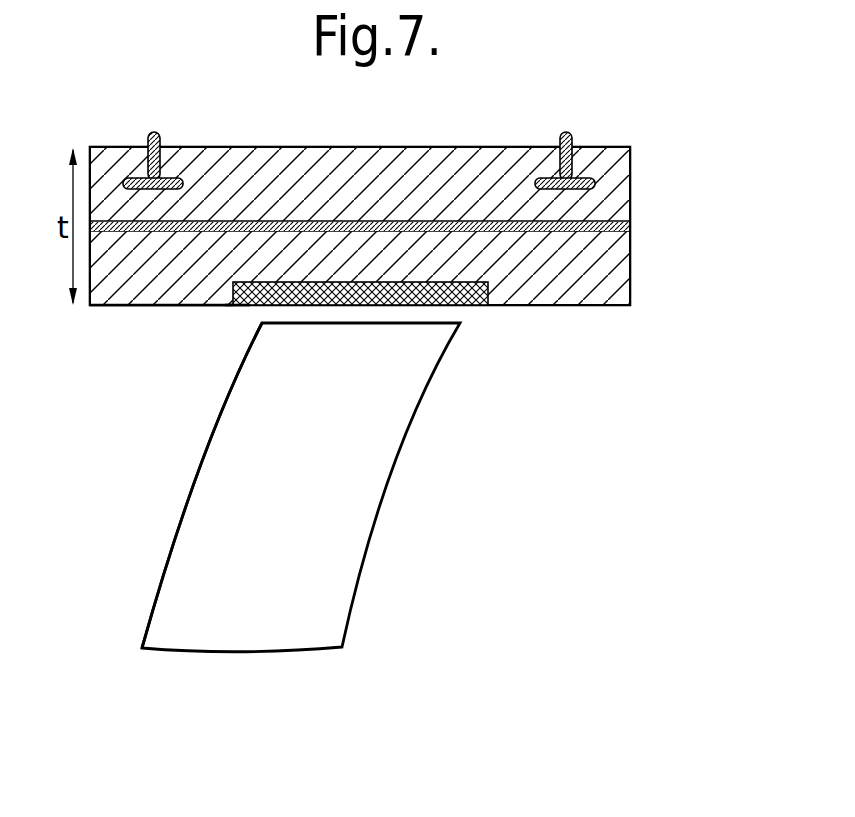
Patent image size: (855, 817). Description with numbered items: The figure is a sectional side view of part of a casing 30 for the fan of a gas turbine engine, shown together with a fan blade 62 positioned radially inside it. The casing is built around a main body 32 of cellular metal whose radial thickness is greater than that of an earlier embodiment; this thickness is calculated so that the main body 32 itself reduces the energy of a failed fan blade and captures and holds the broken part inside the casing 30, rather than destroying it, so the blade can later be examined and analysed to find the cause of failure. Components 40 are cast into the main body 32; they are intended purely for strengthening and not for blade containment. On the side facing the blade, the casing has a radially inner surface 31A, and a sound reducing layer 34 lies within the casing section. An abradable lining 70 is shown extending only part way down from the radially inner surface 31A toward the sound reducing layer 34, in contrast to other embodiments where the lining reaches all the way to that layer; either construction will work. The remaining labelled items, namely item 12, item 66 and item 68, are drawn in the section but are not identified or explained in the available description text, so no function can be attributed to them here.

The print medium sheet 12 is at (332, 592).
The casing 30 is at (116, 333).
The radially inner surface 31A is at (157, 307).
The main body 32 is at (612, 248).
The sound reducing layer 34 is at (350, 221).
The components 40 is at (148, 136).
The fan blade 62 is at (187, 545).
The upper substrate layer 66 is at (587, 306).
The heater element 68 is at (486, 296).
The abradable lining 70 is at (240, 307).